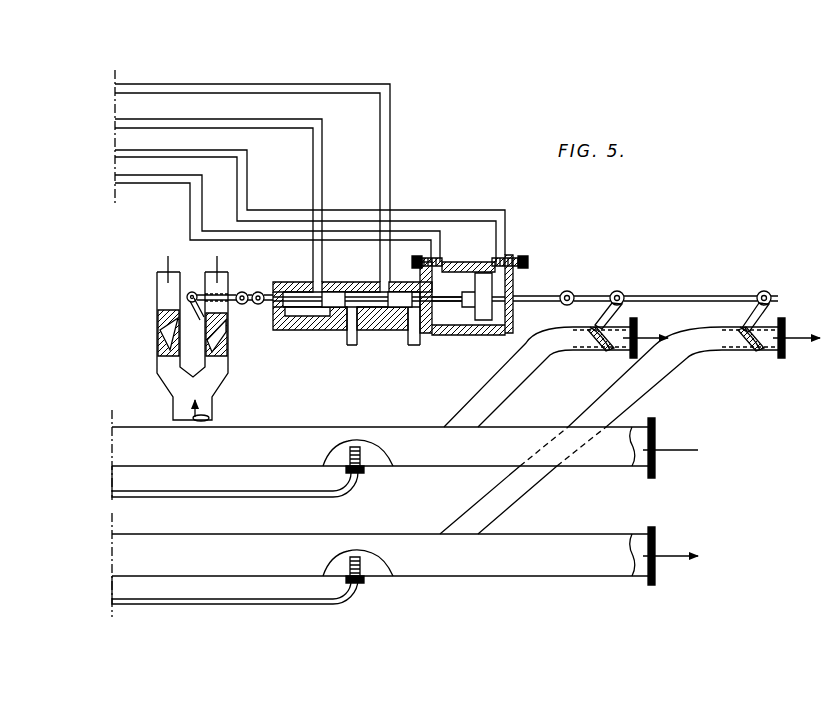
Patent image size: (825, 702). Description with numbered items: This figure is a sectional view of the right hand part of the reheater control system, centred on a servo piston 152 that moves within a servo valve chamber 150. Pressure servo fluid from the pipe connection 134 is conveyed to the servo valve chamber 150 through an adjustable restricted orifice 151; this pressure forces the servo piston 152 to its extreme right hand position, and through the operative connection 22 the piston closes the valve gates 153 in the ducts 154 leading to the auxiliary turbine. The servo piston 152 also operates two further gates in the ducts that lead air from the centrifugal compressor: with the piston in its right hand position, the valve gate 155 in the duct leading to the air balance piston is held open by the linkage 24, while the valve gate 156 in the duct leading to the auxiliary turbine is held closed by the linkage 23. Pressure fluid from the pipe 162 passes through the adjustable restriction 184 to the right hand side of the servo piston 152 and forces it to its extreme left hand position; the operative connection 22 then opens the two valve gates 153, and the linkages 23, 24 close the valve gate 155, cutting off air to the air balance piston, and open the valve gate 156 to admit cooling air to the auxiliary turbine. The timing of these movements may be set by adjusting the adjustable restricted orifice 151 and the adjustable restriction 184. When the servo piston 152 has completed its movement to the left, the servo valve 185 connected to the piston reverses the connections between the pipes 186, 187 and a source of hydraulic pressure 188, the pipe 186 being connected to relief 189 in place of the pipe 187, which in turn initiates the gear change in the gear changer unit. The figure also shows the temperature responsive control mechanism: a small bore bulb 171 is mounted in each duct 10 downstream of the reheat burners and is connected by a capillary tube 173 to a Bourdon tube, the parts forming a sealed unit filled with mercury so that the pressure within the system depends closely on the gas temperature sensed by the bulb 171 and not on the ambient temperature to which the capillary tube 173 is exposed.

The duct 10 is at (292, 447).
The operative connection 22 is at (583, 296).
The linkage 23 is at (237, 293).
The linkage 24 is at (193, 292).
The pipe connection 134 is at (122, 179).
The servo valve chamber 150 is at (476, 328).
The adjustable restricted orifice 151 is at (440, 258).
The servo piston 152 is at (541, 335).
The valve gates 153 is at (742, 328).
The ducts 154 is at (600, 405).
The valve gate 155 is at (162, 337).
The valve gate 156 is at (230, 340).
The pipe 162 is at (132, 157).
The small bore bulb 171 is at (357, 443).
The capillary tube 173 is at (267, 602).
The adjustable restriction 184 is at (508, 257).
The servo valve 185 is at (372, 300).
The pipe 186 is at (168, 88).
The pipe 187 is at (212, 127).
The source of hydraulic pressure 188 is at (345, 335).
The relief 189 is at (428, 342).